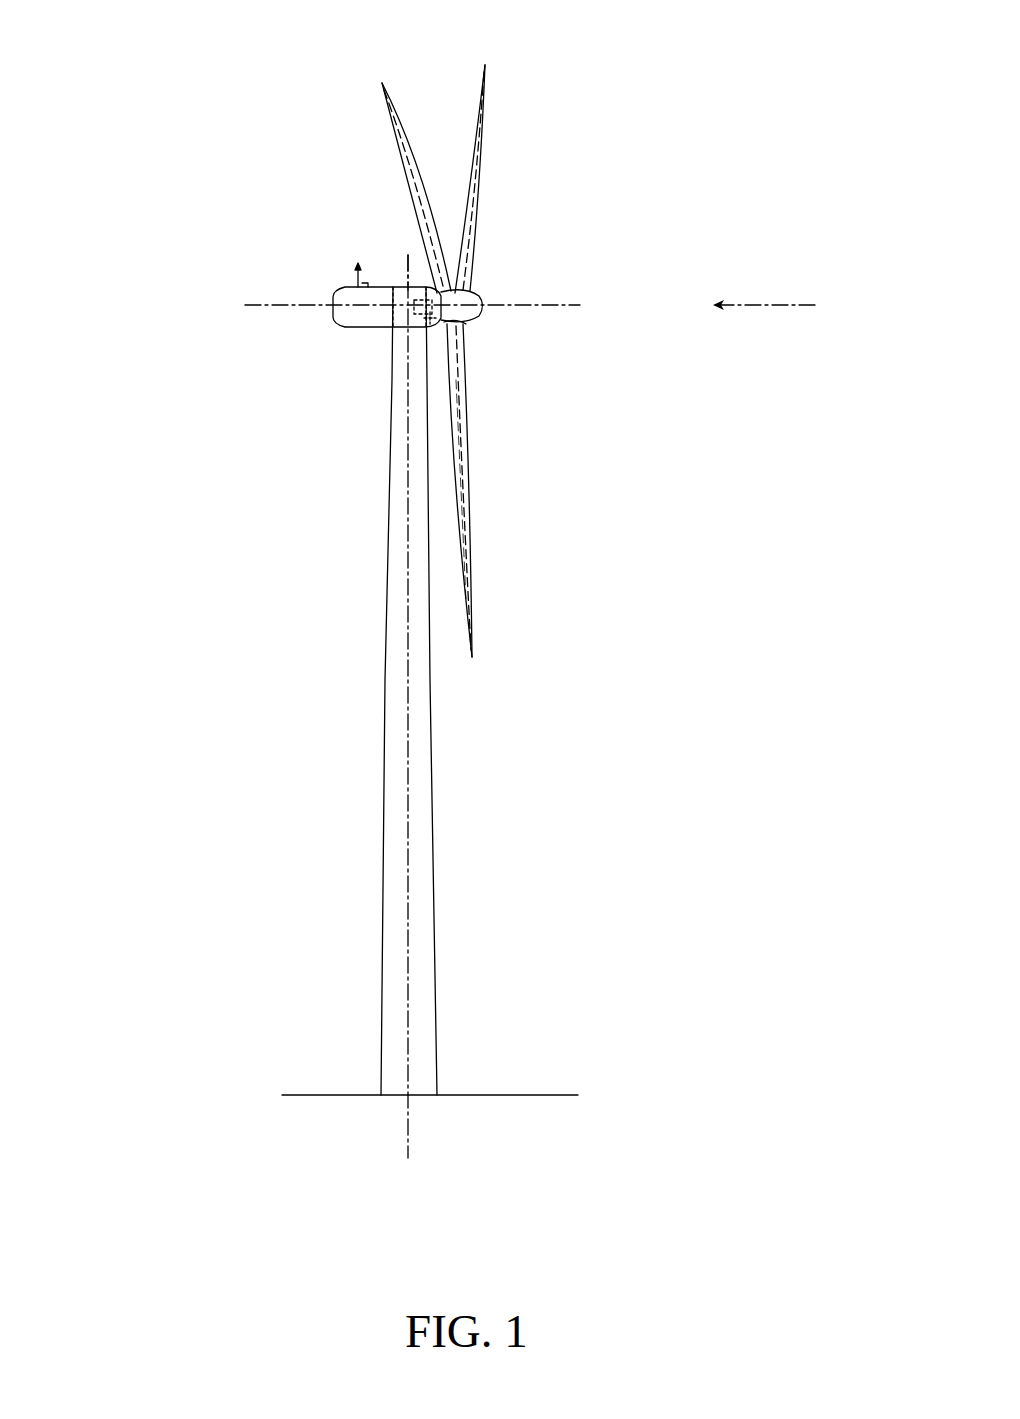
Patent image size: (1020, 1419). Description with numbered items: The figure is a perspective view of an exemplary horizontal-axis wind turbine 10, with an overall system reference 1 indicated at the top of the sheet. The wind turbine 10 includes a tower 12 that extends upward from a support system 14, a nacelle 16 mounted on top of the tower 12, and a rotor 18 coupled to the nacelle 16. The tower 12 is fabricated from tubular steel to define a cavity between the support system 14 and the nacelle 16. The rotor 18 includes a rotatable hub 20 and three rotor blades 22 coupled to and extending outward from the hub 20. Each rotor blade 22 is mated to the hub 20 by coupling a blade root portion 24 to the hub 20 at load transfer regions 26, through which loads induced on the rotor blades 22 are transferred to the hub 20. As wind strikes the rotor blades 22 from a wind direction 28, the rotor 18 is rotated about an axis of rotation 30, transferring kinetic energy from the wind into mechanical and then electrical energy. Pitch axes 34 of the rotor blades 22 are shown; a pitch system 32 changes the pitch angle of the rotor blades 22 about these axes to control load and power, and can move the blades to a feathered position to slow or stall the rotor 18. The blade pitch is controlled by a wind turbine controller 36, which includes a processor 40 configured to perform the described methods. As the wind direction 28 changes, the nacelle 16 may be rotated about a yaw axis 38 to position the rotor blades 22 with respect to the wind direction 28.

The wind direction indicator 1 is at (798, 35).
The wind turbine 10 is at (168, 93).
The tower 12 is at (385, 868).
The support system 14 is at (338, 1095).
The nacelle 16 is at (362, 328).
The rotor 18 is at (487, 208).
The rotatable hub 20 is at (481, 301).
The rotor blade 22 is at (403, 150).
The blade root portion 24 is at (468, 412).
The load transfer regions 26 is at (464, 325).
The wind direction 28 is at (782, 305).
The axis of rotation 30 is at (548, 309).
The pitch system 32 is at (440, 343).
The wind turbine controller 36 is at (408, 348).
The yaw axis 38 is at (412, 753).
The processor 40 is at (408, 246).
The pitch axes 34 is at (380, 87).